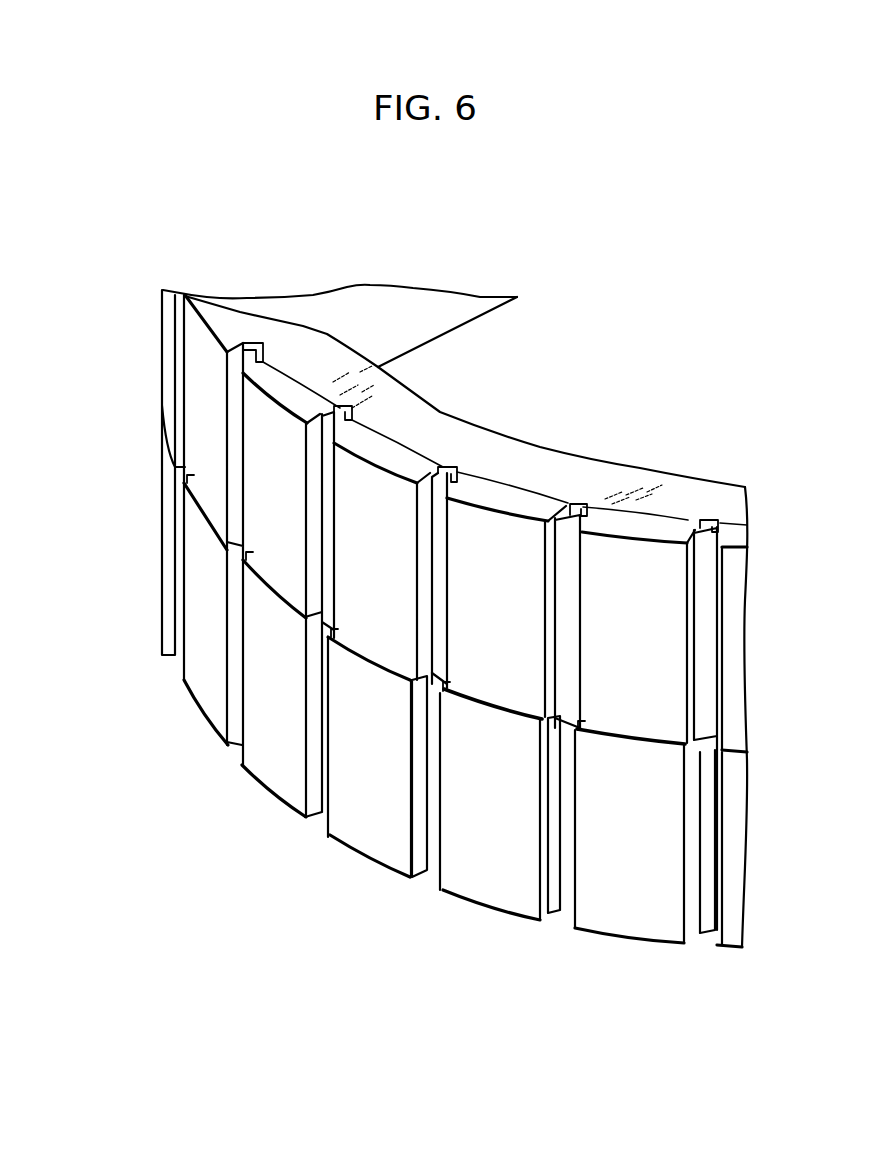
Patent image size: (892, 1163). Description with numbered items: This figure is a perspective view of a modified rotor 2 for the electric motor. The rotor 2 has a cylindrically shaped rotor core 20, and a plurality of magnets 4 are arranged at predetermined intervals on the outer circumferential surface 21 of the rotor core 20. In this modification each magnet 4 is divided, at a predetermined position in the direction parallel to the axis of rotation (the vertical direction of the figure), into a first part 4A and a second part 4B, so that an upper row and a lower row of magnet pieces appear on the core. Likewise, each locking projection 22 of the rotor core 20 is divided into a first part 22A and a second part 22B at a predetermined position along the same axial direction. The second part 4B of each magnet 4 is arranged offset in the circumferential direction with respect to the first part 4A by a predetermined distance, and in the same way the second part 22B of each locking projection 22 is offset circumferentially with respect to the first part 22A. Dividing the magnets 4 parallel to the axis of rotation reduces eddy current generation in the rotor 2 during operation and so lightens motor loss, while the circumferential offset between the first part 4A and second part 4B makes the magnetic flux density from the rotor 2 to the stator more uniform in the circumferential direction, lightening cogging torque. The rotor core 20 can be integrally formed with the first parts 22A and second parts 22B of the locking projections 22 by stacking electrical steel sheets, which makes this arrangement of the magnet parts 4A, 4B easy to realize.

The rotor 2 is at (123, 215).
The rotor core 20 is at (414, 422).
The outer circumferential surface 21 is at (493, 560).
The locking projection 22 is at (437, 700).
The first part of locking projection 22A is at (443, 490).
The second part of locking projection 22B is at (435, 860).
The magnet 4 is at (501, 718).
The first part of magnet 4A is at (565, 533).
The second part of magnet 4B is at (498, 882).